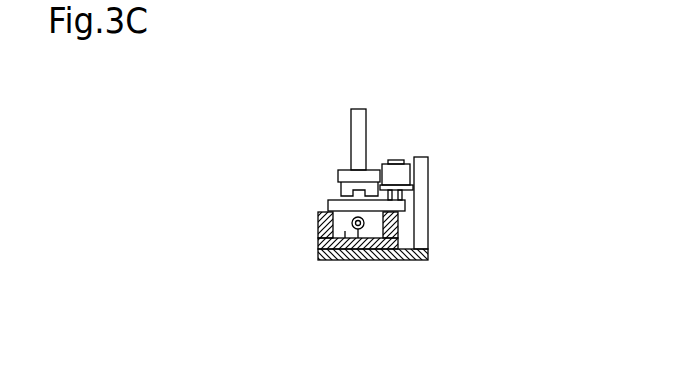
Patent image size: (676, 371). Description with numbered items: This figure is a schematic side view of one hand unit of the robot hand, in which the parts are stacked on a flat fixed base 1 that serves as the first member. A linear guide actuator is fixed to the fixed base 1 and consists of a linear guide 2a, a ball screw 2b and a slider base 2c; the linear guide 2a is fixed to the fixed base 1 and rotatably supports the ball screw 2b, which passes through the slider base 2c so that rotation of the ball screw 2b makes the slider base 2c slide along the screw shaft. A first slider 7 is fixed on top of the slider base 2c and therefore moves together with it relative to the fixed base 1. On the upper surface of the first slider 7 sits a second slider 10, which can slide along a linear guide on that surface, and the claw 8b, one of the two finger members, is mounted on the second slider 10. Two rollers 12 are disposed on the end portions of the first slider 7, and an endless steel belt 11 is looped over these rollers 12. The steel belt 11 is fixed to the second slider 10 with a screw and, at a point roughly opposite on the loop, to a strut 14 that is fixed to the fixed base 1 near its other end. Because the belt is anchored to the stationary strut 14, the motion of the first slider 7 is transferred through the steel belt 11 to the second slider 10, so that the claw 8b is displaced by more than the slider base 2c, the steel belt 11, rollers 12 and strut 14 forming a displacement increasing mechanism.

The fixed base 1 is at (332, 285).
The linear guide 2a is at (322, 247).
The ball screw 2b is at (363, 258).
The slider base 2c is at (338, 258).
The first slider 7 is at (330, 205).
The claw 8b is at (362, 122).
The second slider 10 is at (343, 175).
The steel belt 11 is at (397, 173).
The rollers 12 is at (399, 160).
The strut 14 is at (423, 228).